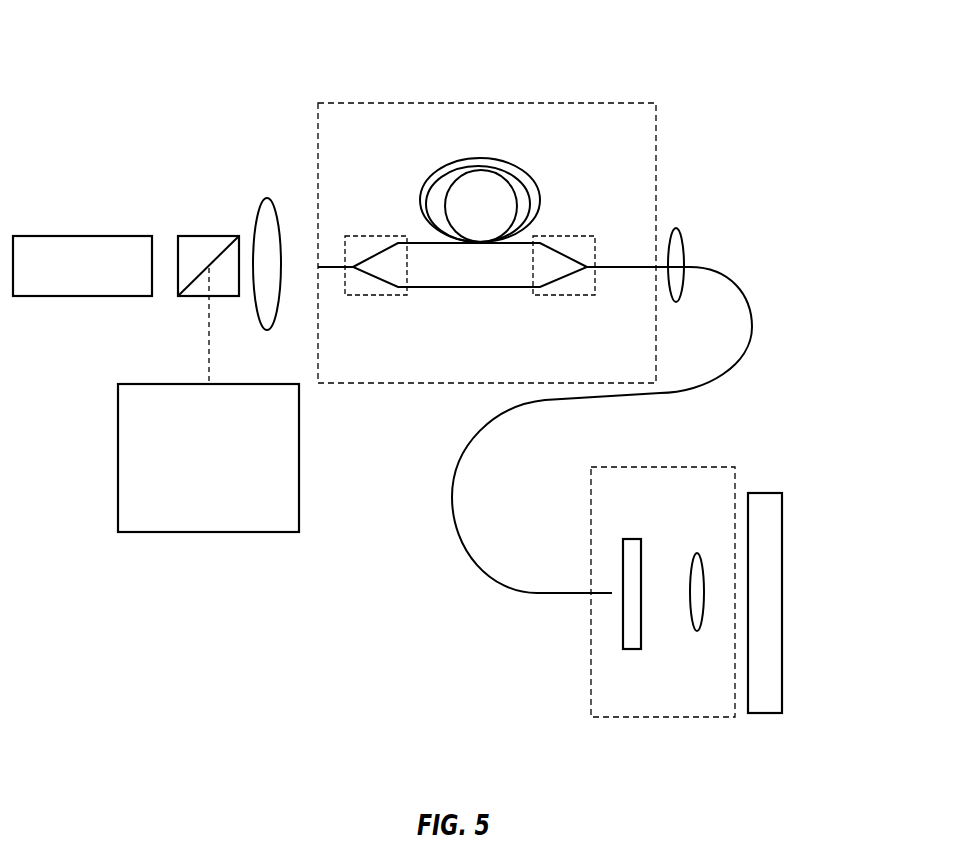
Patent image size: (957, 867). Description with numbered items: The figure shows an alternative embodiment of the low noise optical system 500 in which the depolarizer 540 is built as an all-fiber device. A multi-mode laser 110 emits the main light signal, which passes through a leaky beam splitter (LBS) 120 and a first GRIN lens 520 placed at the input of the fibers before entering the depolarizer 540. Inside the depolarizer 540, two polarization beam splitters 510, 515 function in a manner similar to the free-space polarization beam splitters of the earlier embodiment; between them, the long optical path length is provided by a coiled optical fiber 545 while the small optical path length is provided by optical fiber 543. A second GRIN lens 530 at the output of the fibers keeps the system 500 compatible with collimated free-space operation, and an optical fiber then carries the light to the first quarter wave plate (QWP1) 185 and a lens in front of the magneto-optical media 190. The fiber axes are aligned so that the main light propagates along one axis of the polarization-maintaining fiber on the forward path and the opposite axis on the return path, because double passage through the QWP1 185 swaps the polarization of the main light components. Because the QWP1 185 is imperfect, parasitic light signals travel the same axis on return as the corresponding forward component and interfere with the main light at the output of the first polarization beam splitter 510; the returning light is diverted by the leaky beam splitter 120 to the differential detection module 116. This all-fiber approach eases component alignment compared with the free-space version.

The system 500 is at (146, 48).
The multi-mode laser 110 is at (82, 236).
The leaky beam splitter 120 is at (192, 296).
The differential detection module 116 is at (118, 460).
The first GRIN lens 520 is at (267, 198).
The depolarizer 540 is at (482, 103).
The optical fiber 545 is at (425, 192).
The optical fiber 543 is at (435, 288).
The first polarization beam splitter 510 is at (356, 296).
The polarization beam splitter 515 is at (559, 296).
The second GRIN lens 530 is at (678, 229).
The first quarter wave plate 185 is at (590, 678).
The magneto-optical media 190 is at (782, 598).